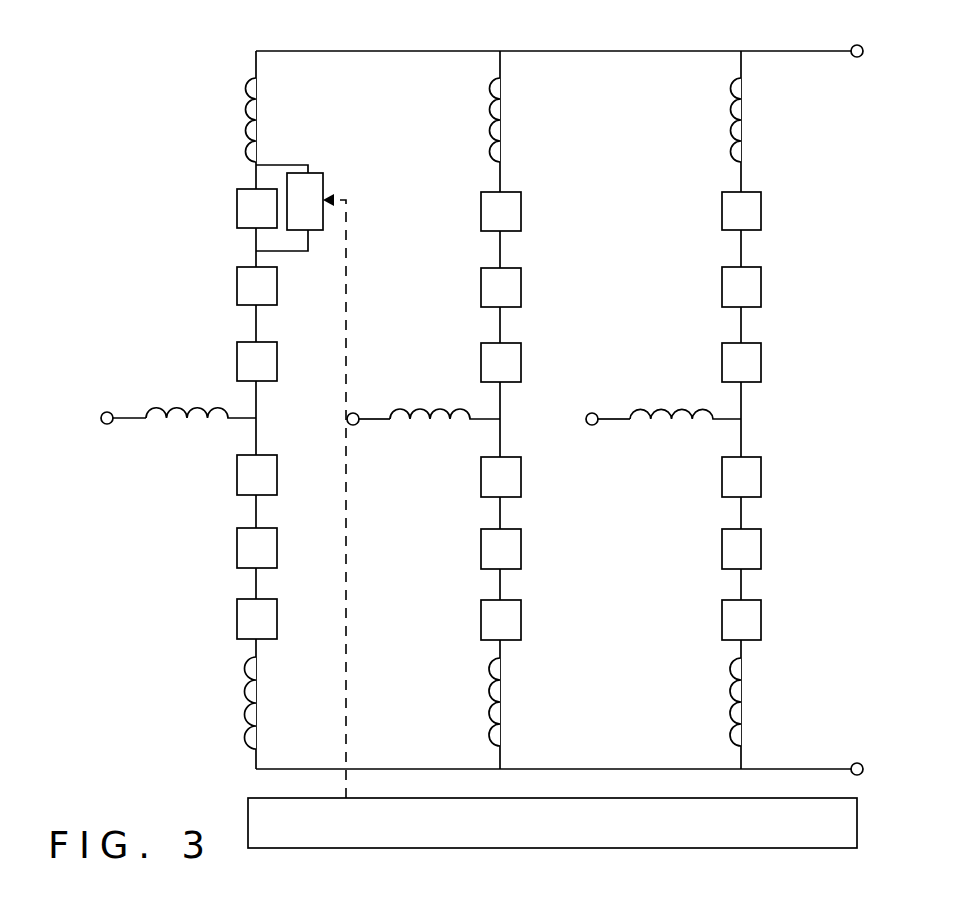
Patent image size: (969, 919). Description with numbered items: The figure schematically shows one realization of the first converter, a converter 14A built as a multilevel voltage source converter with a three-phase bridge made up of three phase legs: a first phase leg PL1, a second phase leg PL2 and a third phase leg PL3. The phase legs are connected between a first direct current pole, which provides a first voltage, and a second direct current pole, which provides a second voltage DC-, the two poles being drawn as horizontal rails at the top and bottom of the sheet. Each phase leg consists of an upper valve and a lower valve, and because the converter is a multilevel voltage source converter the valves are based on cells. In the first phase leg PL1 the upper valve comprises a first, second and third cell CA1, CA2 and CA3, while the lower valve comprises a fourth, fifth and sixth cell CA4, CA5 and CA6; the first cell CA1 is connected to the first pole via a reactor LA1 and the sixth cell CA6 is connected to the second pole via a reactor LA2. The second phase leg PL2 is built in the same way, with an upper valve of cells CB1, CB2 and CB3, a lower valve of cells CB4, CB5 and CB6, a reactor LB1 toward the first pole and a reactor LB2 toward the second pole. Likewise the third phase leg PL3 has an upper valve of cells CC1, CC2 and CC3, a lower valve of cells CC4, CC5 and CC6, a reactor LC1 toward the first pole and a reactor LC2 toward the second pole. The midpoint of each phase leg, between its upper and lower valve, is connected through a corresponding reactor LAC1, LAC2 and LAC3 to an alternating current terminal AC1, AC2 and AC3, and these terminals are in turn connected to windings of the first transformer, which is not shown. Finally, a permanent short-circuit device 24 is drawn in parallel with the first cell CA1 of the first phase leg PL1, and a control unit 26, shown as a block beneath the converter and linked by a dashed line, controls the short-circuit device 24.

The converter 14A is at (218, 82).
The permanent short-circuit device 24 is at (324, 188).
The control unit 26 is at (552, 521).
The first phase leg PL1 is at (257, 393).
The second phase leg PL2 is at (494, 392).
The third phase leg PL3 is at (735, 391).
The reactor LA1 is at (214, 120).
The reactor LA2 is at (217, 703).
The reactor LB1 is at (457, 120).
The reactor LB2 is at (460, 702).
The reactor LC1 is at (701, 120).
The reactor LC2 is at (700, 702).
The first cell CA1 is at (220, 211).
The second cell CA2 is at (219, 288).
The third cell CA3 is at (222, 361).
The fourth cell CA4 is at (222, 475).
The fifth cell CA5 is at (221, 548).
The sixth cell CA6 is at (222, 619).
The first cell CB1 is at (464, 213).
The second cell CB2 is at (464, 288).
The third cell CB3 is at (464, 362).
The fourth cell CB4 is at (464, 477).
The fifth cell CB5 is at (464, 549).
The sixth cell CB6 is at (464, 620).
The first cell CC1 is at (703, 211).
The second cell CC2 is at (705, 287).
The third cell CC3 is at (705, 362).
The fourth cell CC4 is at (705, 477).
The fifth cell CC5 is at (705, 549).
The sixth cell CC6 is at (705, 620).
The alternating current terminal AC1 is at (120, 398).
The alternating current terminal AC2 is at (358, 403).
The alternating current terminal AC3 is at (603, 403).
The reactor LAC1 is at (201, 431).
The reactor LAC2 is at (445, 432).
The reactor LAC3 is at (685, 434).
The second voltage DC- is at (572, 746).